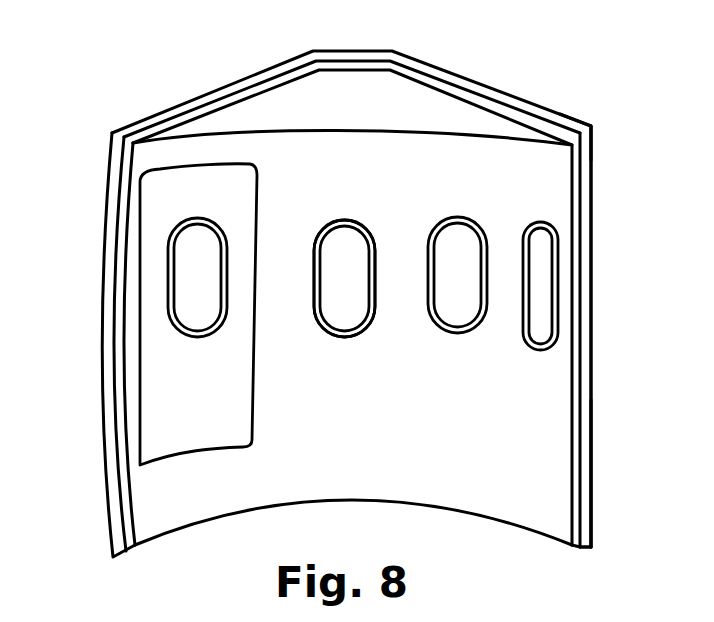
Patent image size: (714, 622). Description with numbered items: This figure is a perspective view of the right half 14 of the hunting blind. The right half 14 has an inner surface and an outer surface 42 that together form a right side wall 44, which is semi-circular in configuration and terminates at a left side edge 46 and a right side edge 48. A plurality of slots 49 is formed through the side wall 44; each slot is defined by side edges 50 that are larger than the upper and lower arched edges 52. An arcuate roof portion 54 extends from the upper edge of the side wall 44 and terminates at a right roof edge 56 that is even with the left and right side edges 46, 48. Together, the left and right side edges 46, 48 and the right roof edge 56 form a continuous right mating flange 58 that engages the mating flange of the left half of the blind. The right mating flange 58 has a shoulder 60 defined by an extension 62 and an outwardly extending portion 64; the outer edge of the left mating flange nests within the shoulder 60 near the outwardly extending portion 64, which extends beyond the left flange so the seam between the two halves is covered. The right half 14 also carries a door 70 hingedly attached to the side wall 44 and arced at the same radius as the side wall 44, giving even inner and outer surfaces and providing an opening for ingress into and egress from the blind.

The right half 14 is at (502, 477).
The outer surface 42 is at (588, 234).
The right side wall 44 is at (193, 505).
The left side edge 46 is at (115, 370).
The right side edge 48 is at (585, 332).
The slots 49 is at (200, 248).
The side edges 50 is at (370, 272).
The upper and lower arched edges 52 is at (345, 220).
The arcuate roof portion 54 is at (295, 101).
The right roof edge 56 is at (219, 97).
The right mating flange 58 is at (575, 131).
The shoulder 60 is at (576, 381).
The extension 62 is at (577, 523).
The outwardly extending portion 64 is at (585, 437).
The door 70 is at (169, 398).